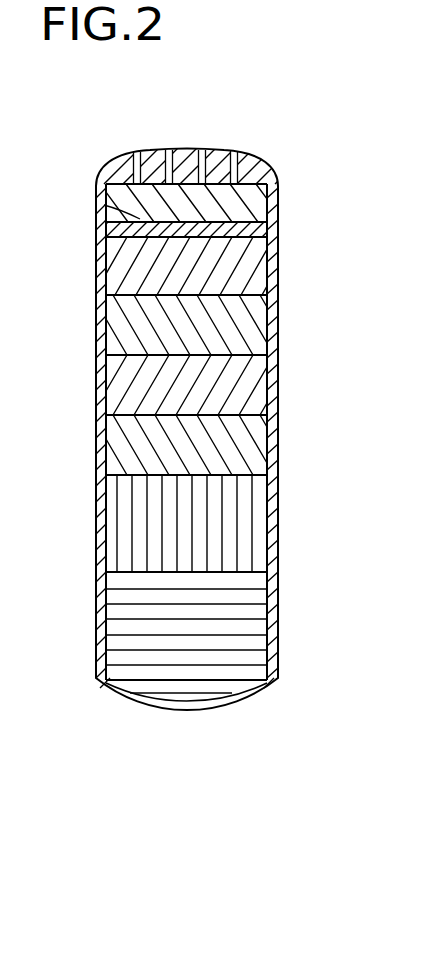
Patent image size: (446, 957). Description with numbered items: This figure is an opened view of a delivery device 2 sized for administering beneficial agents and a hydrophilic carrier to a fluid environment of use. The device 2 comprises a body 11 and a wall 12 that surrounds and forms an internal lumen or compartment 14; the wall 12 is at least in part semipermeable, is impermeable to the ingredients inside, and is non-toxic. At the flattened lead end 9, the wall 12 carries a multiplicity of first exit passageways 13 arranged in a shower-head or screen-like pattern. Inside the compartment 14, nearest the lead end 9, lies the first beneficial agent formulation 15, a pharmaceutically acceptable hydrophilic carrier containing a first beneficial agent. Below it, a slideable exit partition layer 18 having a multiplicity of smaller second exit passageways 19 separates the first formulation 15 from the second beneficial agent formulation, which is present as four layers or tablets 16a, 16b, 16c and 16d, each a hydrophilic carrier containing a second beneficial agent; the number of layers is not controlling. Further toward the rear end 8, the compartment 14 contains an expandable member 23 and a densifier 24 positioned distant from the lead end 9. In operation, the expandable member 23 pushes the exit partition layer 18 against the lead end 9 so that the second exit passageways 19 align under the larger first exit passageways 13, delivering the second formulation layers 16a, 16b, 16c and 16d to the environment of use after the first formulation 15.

The delivery device 2 is at (274, 150).
The rear end 8 is at (227, 708).
The lead end 9 is at (189, 129).
The body 11 is at (280, 387).
The wall 12 is at (282, 430).
The first exit passageways 13 is at (234, 154).
The internal compartment 14 is at (115, 520).
The first beneficial agent formulation 15 is at (273, 195).
The agent formulation layer 16a is at (130, 265).
The agent formulation layer 16b is at (133, 323).
The agent formulation layer 16c is at (133, 382).
The agent formulation layer 16d is at (117, 443).
The slideable exit partition layer 18 is at (267, 241).
The second exit passageways 19 is at (104, 205).
The expandable member 23 is at (233, 543).
The densifier 24 is at (247, 613).